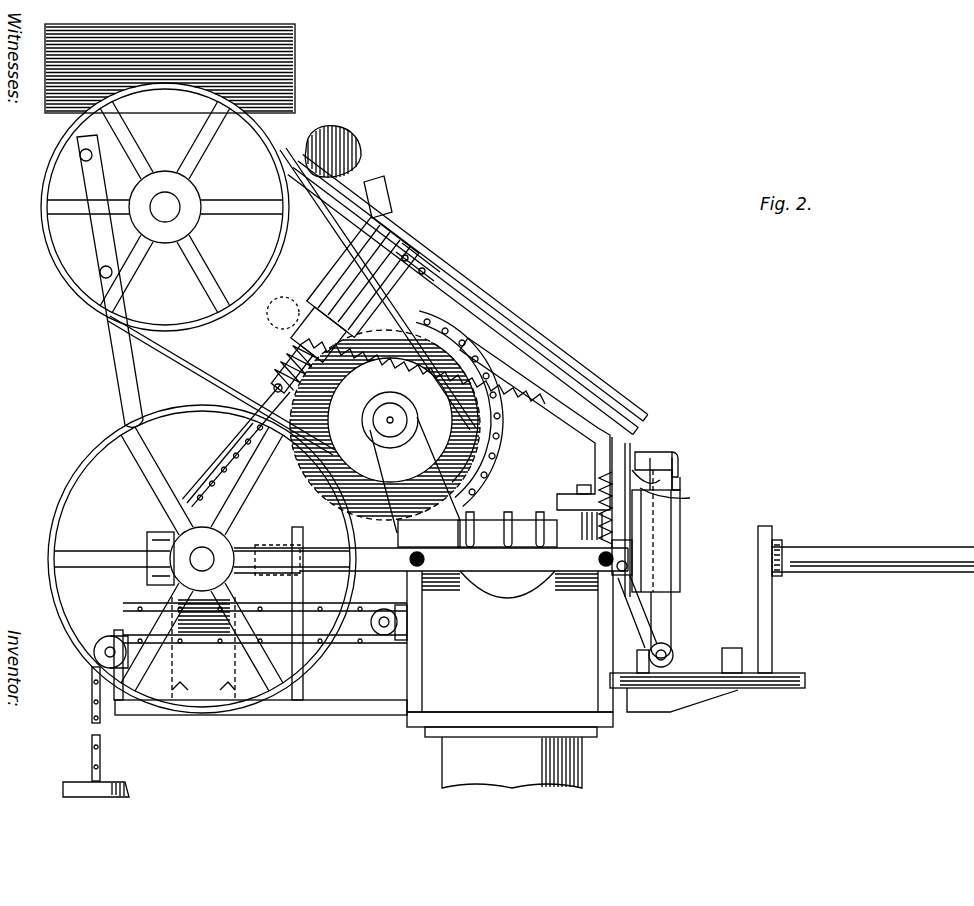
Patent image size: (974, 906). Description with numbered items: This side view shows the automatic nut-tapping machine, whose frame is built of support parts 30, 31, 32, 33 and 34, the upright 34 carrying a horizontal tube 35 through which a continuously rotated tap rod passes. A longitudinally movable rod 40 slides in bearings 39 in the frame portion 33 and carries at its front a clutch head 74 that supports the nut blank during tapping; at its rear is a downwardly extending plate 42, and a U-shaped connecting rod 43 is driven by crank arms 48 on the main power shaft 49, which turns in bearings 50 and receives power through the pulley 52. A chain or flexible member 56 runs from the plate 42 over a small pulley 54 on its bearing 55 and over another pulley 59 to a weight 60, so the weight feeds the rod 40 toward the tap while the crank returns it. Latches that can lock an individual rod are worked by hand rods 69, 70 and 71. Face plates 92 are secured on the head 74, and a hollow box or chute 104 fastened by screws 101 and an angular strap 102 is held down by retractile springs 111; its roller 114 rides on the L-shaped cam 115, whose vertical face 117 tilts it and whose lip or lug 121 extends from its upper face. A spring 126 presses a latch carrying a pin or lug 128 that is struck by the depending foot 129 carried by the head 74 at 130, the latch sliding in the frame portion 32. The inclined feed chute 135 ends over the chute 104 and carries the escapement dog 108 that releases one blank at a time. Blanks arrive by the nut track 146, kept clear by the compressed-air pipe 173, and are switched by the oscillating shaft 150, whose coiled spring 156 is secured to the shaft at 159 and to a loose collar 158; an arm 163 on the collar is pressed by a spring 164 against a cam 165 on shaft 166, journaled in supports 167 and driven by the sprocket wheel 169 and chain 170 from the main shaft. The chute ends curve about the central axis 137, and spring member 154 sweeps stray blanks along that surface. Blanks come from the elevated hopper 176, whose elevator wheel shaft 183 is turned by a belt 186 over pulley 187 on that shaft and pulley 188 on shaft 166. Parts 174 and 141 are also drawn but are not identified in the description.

The hopper 176 is at (330, 46).
The shaft 183 is at (170, 205).
The pulley 187 is at (48, 215).
The belt 186 is at (205, 345).
The nut track or chute 146 is at (350, 180).
The block 174 is at (385, 185).
The pipe 173 is at (352, 238).
The central axis 137 is at (412, 245).
The spring member 154 is at (440, 275).
The sprocket wheel 169 is at (465, 372).
The arm 163 is at (308, 342).
The collar 158 is at (305, 342).
The shaft 150 is at (292, 360).
The spring securing point 159 is at (282, 384).
The coiled spring 156 is at (390, 420).
The pulley 188 is at (385, 425).
The shaft 166 is at (392, 425).
The spring 164 is at (522, 405).
The supports 167 is at (430, 495).
The cam 165 is at (290, 470).
The chain 170 is at (230, 440).
The pulley 52 is at (68, 477).
The crank arms 48 is at (150, 545).
The connecting rod 43 is at (280, 545).
The main power shaft 49 is at (290, 540).
The rod 40 is at (405, 562).
The rod 71 is at (470, 512).
The rod 70 is at (508, 512).
The rod 69 is at (540, 512).
The small pulley 54 is at (385, 640).
The downwardly extending plate 42 is at (350, 648).
The bearing 55 is at (384, 618).
The pulley 59 is at (100, 648).
The bearings 50 is at (205, 665).
The hatched block 141 is at (204, 618).
The support part 31 is at (330, 715).
The chain or flexible member 56 is at (91, 700).
The weight 60 is at (128, 784).
The frame portion 33 is at (420, 650).
The upright 34 is at (772, 600).
The bearings 39 is at (585, 580).
The support part 30 is at (558, 765).
The feed chute 135 is at (592, 412).
The escapement dog 108 is at (630, 467).
The screws 101 is at (680, 470).
The angular strap 102 is at (680, 455).
The hollow box or chute 104 is at (648, 468).
The retractile springs 111 is at (680, 501).
The face plates 92 is at (680, 495).
The clutch head 74 is at (641, 550).
The lip or lug 121 is at (664, 475).
The roller 114 is at (672, 650).
The foot mounting point 130 is at (626, 572).
The depending foot 129 is at (640, 622).
The spring 126 is at (655, 660).
The pin or lug 128 is at (645, 673).
The vertical face 117 is at (720, 660).
The cam 115 is at (700, 690).
The frame portion 32 is at (782, 690).
The horizontal tube 35 is at (905, 547).